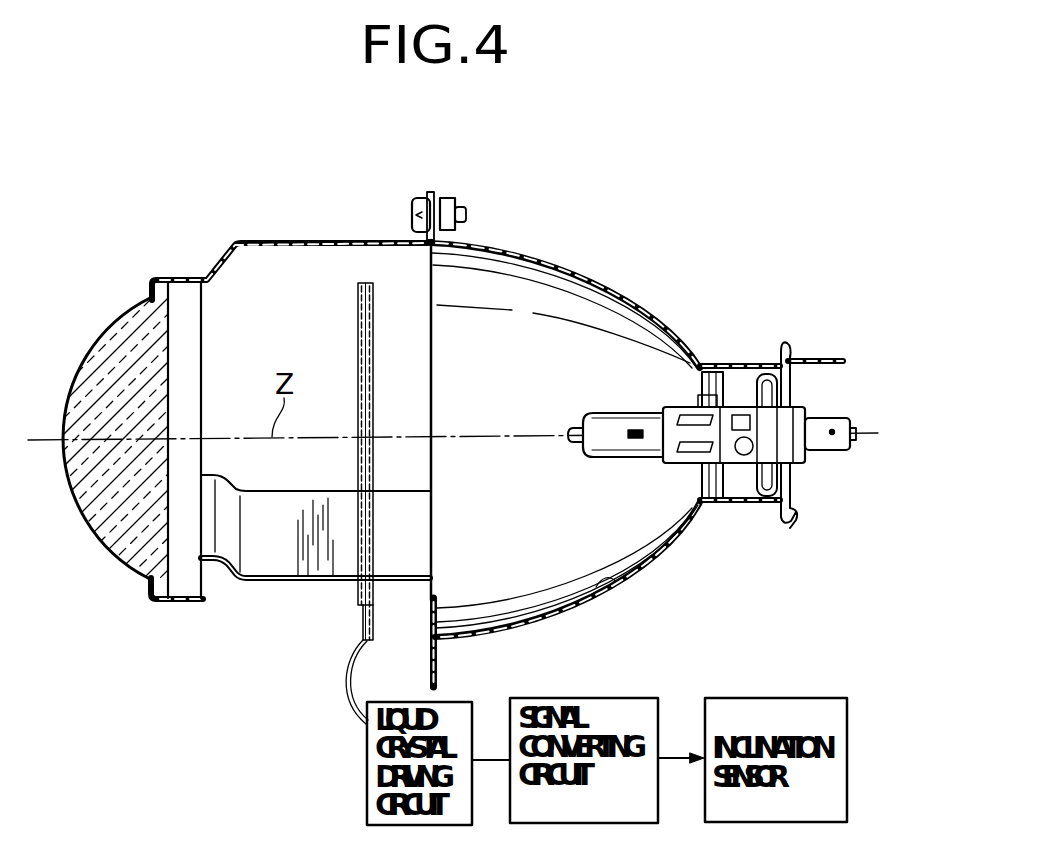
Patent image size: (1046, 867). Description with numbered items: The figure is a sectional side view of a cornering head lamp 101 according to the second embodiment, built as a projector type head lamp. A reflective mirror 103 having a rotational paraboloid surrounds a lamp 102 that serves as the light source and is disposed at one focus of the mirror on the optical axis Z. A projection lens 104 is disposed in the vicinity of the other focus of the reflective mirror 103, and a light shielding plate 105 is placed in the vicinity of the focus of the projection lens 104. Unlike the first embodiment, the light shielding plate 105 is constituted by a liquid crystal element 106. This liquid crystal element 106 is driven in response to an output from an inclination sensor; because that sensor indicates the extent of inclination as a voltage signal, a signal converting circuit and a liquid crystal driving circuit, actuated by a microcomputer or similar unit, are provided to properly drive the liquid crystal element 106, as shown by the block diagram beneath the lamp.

The cornering head lamp 101 is at (585, 233).
The lamp 102 is at (599, 449).
The reflective mirror 103 is at (620, 585).
The projection lens 104 is at (133, 547).
The light shielding plate 105 is at (358, 598).
The liquid crystal element 106 is at (293, 503).